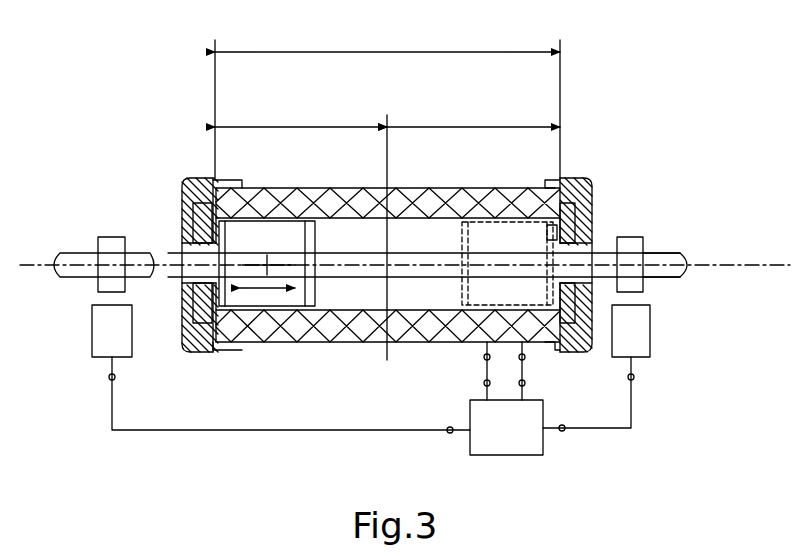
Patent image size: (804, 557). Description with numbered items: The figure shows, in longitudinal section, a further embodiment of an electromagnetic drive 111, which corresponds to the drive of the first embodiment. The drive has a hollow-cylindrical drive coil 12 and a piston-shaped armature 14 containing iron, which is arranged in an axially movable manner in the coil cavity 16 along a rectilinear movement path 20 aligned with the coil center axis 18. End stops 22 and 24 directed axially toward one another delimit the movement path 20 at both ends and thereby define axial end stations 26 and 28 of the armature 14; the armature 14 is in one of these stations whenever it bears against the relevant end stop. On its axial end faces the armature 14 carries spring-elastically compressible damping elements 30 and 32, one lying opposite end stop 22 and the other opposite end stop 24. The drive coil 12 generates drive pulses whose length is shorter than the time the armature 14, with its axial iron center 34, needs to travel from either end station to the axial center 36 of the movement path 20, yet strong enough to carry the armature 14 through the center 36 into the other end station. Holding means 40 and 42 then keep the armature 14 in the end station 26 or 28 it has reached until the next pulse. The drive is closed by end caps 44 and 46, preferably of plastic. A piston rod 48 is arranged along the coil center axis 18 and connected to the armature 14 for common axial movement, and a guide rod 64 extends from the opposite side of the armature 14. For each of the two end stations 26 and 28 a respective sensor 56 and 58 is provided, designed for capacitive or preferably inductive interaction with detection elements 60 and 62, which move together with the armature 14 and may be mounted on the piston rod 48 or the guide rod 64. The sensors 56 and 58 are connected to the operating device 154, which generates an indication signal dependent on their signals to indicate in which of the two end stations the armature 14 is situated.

The drive coil 12 is at (388, 248).
The armature 14 is at (386, 279).
The coil cavity 16 is at (350, 230).
The coil center axis 18 is at (387, 237).
The movement path 20 is at (322, 48).
The end stop 22 is at (176, 262).
The end station 26 is at (176, 262).
The end stop 24 is at (588, 272).
The end station 28 is at (588, 272).
The damping element 30 is at (240, 330).
The damping element 32 is at (312, 320).
The axial iron center 34 is at (268, 250).
The axial center of the movement path 36 is at (390, 125).
The holding means 40 is at (205, 340).
The holding means 42 is at (568, 345).
The end cap 44 is at (196, 345).
The end cap 46 is at (585, 348).
The piston rod 48 is at (134, 250).
The sensor 56 is at (95, 323).
The sensor 58 is at (645, 325).
The detection element 60 is at (98, 245).
The detection element 62 is at (630, 245).
The guide rod 64 is at (668, 255).
The electromagnetic drive 111 is at (594, 108).
The operating device 154 is at (532, 437).